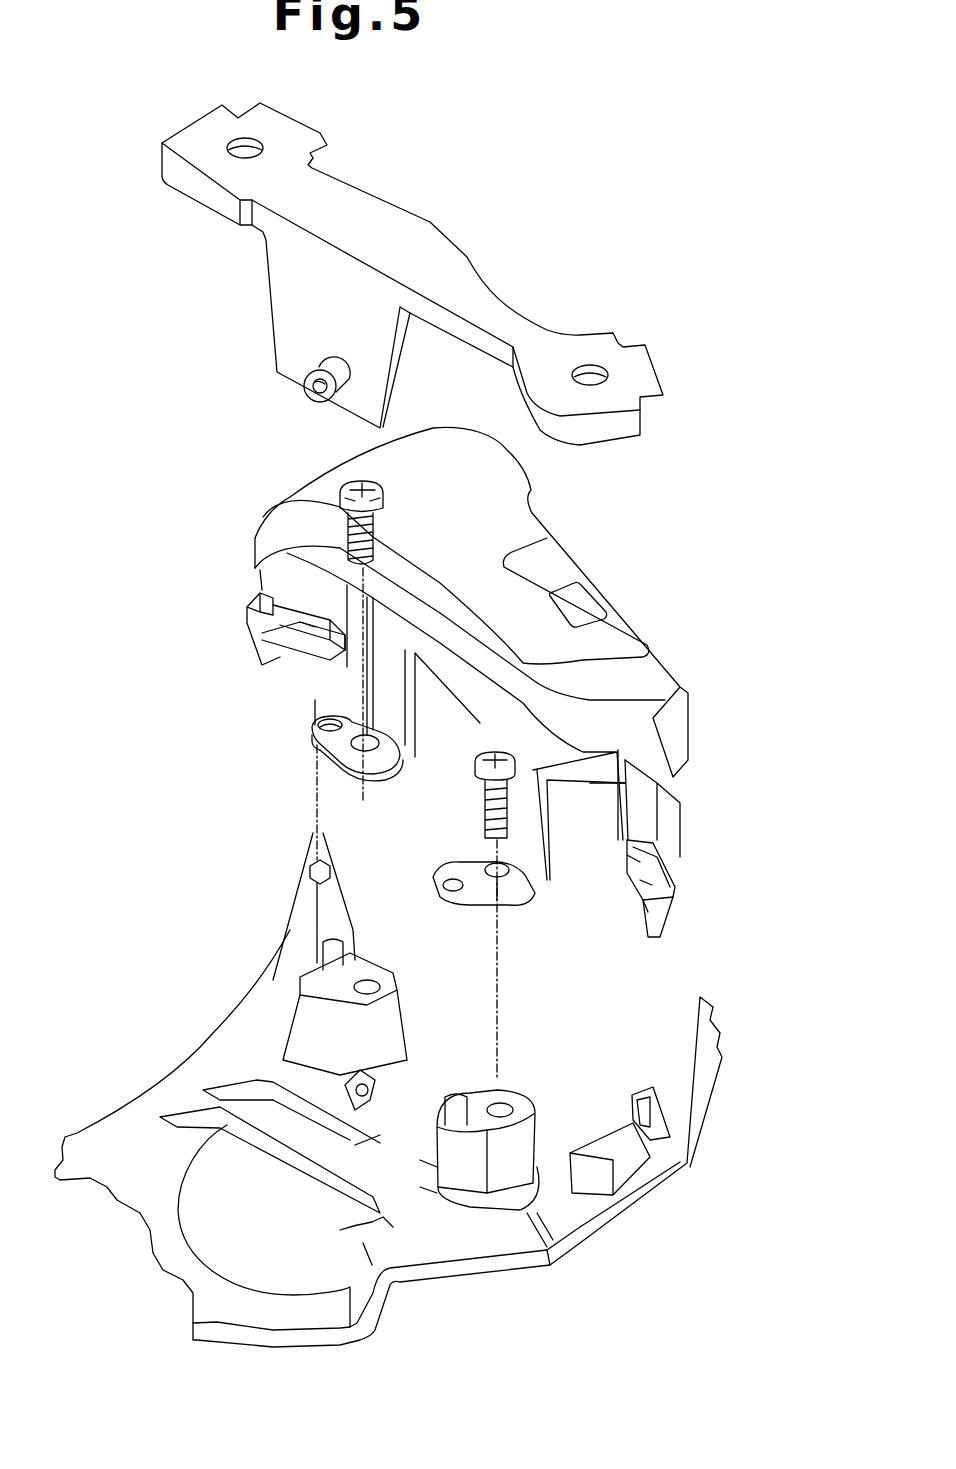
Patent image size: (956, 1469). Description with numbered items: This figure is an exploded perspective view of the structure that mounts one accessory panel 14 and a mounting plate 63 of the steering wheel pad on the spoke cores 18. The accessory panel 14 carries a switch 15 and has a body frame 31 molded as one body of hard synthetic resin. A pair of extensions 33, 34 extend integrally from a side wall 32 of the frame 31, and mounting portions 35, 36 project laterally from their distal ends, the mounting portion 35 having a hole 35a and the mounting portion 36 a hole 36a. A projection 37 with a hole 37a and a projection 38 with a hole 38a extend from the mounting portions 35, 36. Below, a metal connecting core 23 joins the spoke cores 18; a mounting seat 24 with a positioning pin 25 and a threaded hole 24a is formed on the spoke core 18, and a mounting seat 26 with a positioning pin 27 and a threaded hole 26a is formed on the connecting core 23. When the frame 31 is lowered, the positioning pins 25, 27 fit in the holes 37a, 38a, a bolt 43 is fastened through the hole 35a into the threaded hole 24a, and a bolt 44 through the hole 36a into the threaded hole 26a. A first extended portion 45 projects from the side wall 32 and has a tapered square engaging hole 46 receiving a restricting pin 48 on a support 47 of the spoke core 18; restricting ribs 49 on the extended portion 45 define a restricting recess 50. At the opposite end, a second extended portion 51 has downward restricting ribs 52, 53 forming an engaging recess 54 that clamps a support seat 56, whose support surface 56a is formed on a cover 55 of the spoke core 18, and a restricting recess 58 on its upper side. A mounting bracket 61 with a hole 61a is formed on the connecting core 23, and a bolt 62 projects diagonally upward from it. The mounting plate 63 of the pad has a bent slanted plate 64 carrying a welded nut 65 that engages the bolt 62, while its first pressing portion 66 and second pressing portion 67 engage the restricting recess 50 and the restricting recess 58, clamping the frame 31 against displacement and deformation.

The accessory panel 14 is at (545, 517).
The switch 15 is at (693, 618).
The spoke core 18 is at (507, 1307).
The connecting core 23 is at (317, 1153).
The mounting seat 24 is at (397, 963).
The threaded hole 24a is at (387, 982).
The positioning pin 25 is at (327, 958).
The mounting seat 26 is at (491, 1115).
The threaded hole 26a is at (513, 1092).
The positioning pin 27 is at (460, 1092).
The body frame 31 is at (267, 527).
The side wall 32 is at (460, 690).
The extension 33 is at (380, 685).
The extension 34 is at (543, 822).
The mounting portion 35 is at (335, 777).
The hole 35a is at (378, 748).
The mounting portion 36 is at (516, 925).
The hole 36a is at (510, 893).
The projection 37 is at (312, 743).
The hole 37a is at (312, 727).
The projection 38 is at (427, 893).
The hole 38a is at (453, 890).
The bolt 43 is at (377, 540).
The bolt 44 is at (480, 817).
The first extended portion 45 is at (262, 650).
The engaging hole 46 is at (300, 655).
The support 47 is at (300, 923).
The restricting pin 48 is at (310, 860).
The restricting ribs 49 is at (337, 633).
The restricting recess 50 is at (283, 617).
The second extended portion 51 is at (637, 885).
The restricting rib 52 is at (630, 872).
The restricting rib 53 is at (647, 938).
The engaging recess 54 is at (640, 913).
The cover 55 is at (617, 1143).
The support seat 56 is at (630, 1102).
The support surface 56a is at (643, 1090).
The restricting recess 58 is at (670, 870).
The mounting bracket 61 is at (420, 1087).
The hole 61a is at (367, 1083).
The bolt 62 is at (360, 1155).
The mounting plate 63 is at (403, 230).
The slanted plate 64 is at (280, 322).
The nut 65 is at (317, 397).
The first pressing portion 66 is at (293, 132).
The second pressing portion 67 is at (647, 367).